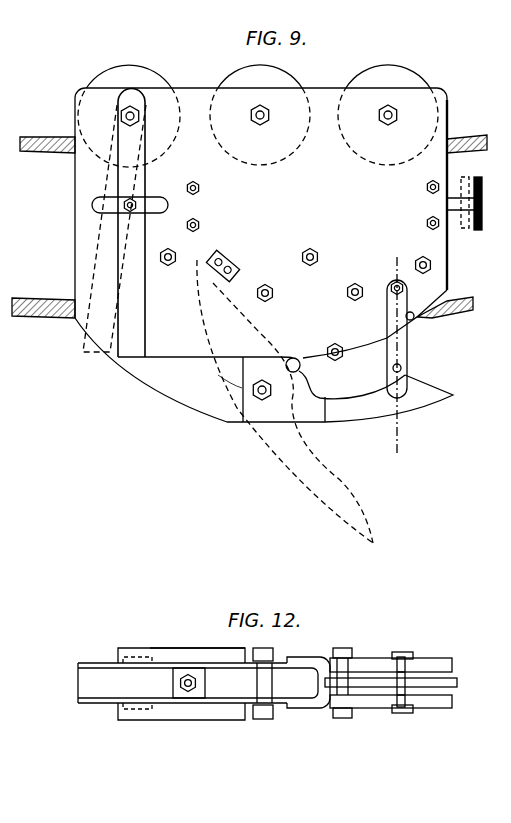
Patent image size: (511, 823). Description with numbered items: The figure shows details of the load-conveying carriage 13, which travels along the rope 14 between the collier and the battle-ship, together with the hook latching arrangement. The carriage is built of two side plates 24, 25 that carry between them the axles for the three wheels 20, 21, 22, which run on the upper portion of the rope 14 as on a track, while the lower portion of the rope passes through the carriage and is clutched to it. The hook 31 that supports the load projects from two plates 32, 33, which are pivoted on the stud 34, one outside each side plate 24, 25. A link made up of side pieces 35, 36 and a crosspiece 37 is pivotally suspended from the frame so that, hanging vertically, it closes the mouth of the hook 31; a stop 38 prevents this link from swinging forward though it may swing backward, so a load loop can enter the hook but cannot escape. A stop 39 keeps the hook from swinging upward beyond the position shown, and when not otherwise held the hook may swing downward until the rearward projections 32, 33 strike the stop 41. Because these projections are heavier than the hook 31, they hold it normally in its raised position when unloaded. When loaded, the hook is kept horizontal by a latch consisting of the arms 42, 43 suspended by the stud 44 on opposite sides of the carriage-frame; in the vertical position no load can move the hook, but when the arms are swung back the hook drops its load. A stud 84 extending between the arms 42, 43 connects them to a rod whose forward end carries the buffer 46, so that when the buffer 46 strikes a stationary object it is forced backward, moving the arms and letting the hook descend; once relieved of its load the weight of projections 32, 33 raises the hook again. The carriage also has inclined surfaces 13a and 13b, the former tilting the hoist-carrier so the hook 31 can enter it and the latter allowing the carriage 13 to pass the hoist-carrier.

In FIG. 9, the load-conveying carriage 13 is at (261, 224).
In FIG. 9, the inclined surface 13a is at (366, 351).
In FIG. 9, the inclined surface 13b is at (150, 388).
In FIG. 9, the rope 14 is at (462, 143).
In FIG. 9, the wheel 20 is at (129, 116).
In FIG. 9, the wheel 21 is at (260, 115).
In FIG. 9, the wheel 22 is at (388, 115).
In FIG. 12, the side plate 24 is at (365, 708).
In FIG. 9, the side plate 25 is at (337, 270).
In FIG. 12, the side plate 25 is at (365, 664).
In FIG. 9, the hook 31 is at (287, 401).
In FIG. 12, the hook 31 is at (457, 681).
In FIG. 12, the plate 32 is at (197, 716).
In FIG. 9, the plate 33 is at (230, 389).
In FIG. 12, the plate 33 is at (170, 657).
In FIG. 12, the stud 34 is at (266, 722).
In FIG. 9, the side piece of link 35 is at (407, 350).
In FIG. 12, the side piece of link 35 is at (406, 659).
In FIG. 12, the side piece of link 36 is at (403, 713).
In FIG. 9, the crosspiece of link 37 is at (393, 369).
In FIG. 12, the crosspiece of link 37 is at (410, 672).
In FIG. 9, the stop 38 is at (413, 319).
In FIG. 12, the stop 38 is at (402, 652).
In FIG. 9, the stop 39 is at (296, 358).
In FIG. 9, the stop 41 is at (212, 259).
In FIG. 12, the latch arm 42 is at (136, 712).
In FIG. 9, the latch arm 43 is at (114, 223).
In FIG. 12, the latch arm 43 is at (127, 660).
In FIG. 9, the stud 44 is at (145, 113).
In FIG. 9, the buffer 46 is at (482, 195).
In FIG. 9, the stud 84 is at (141, 205).